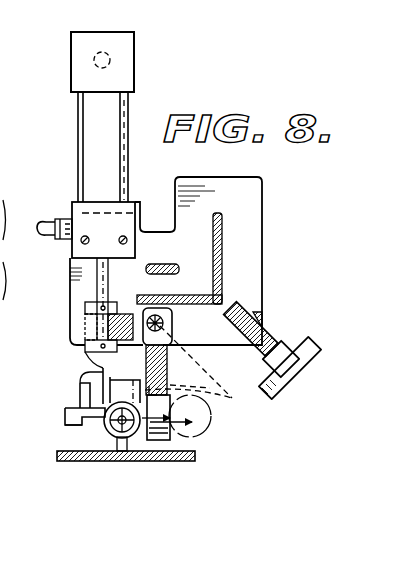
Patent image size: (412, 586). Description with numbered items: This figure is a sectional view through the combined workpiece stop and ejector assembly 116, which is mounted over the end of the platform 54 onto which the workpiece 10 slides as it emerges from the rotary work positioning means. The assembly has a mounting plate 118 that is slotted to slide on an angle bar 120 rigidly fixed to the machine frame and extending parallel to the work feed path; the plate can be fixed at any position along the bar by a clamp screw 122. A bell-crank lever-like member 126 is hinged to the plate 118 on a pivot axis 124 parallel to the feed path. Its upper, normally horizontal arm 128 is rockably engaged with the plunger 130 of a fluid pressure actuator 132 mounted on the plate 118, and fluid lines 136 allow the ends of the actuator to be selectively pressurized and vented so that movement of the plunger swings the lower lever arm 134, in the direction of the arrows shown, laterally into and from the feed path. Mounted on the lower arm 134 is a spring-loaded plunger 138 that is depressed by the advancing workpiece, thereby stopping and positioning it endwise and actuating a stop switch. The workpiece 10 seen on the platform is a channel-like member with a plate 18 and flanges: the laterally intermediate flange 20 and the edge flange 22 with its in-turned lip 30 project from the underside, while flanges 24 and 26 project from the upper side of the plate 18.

The combined workpiece stop and ejector assembly 116 is at (155, 97).
The fluid lines 136 is at (110, 54).
The fluid pressure actuator 132 is at (93, 132).
The plunger 130 is at (87, 278).
The mounting plate 118 is at (255, 206).
The angle bar 120 is at (222, 265).
The upper arm 128 is at (123, 310).
The pivot axis 124 is at (164, 323).
The bell-crank lever-like member 126 is at (158, 369).
The lower lever arm 134 is at (197, 435).
The clamp screw 122 is at (303, 343).
The laterally intermediate flange 20 is at (136, 461).
The plate 18 is at (92, 441).
The spring-loaded plunger 138 is at (113, 448).
The platform 54 is at (102, 461).
The flange 26 is at (100, 377).
The flange 24 is at (80, 388).
The workpiece 10 is at (70, 395).
The flange 22 is at (68, 417).
The in-turned lip 30 is at (68, 426).